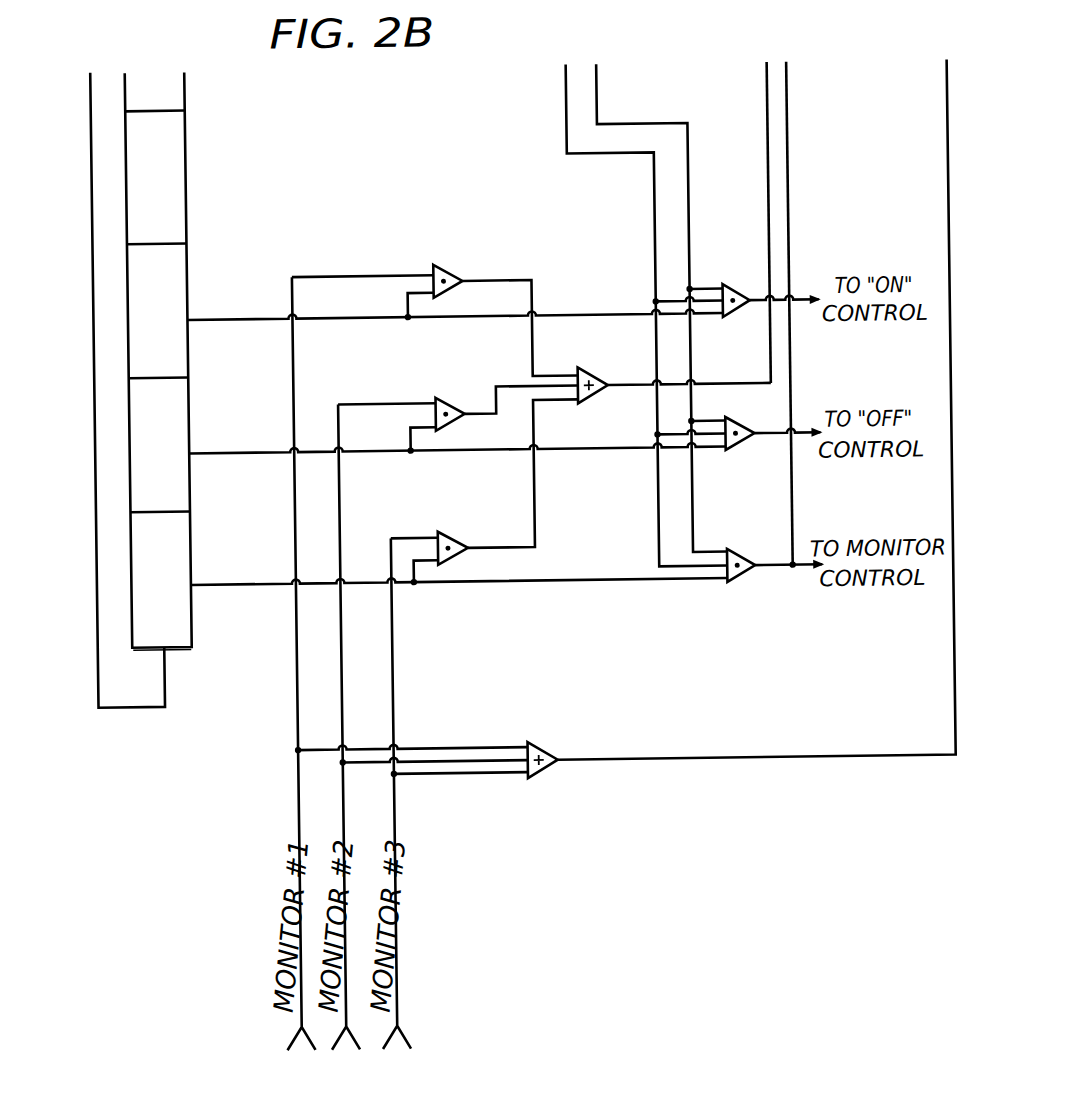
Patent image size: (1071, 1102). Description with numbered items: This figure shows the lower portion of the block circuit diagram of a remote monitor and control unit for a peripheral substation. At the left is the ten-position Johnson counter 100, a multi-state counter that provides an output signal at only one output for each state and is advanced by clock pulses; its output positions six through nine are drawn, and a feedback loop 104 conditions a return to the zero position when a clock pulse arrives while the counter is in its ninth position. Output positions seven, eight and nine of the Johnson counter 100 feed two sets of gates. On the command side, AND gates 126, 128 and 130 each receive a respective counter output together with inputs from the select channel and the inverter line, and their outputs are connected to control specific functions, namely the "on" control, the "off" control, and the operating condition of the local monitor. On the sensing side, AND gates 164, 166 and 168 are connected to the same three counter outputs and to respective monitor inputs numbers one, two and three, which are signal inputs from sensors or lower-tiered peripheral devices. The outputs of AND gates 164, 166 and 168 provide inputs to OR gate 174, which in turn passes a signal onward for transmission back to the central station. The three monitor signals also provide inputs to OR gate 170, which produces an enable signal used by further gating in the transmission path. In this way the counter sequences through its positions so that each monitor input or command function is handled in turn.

The Johnson counter 100 is at (168, 106).
The feedback loop 104 is at (96, 145).
The AND gate 164 is at (450, 262).
The AND gate 166 is at (449, 399).
The AND gate 168 is at (443, 532).
The OR gate 174 is at (618, 352).
The OR gate 170 is at (542, 745).
The AND gate 126 is at (740, 287).
The AND gate 128 is at (744, 448).
The AND gate 130 is at (743, 580).